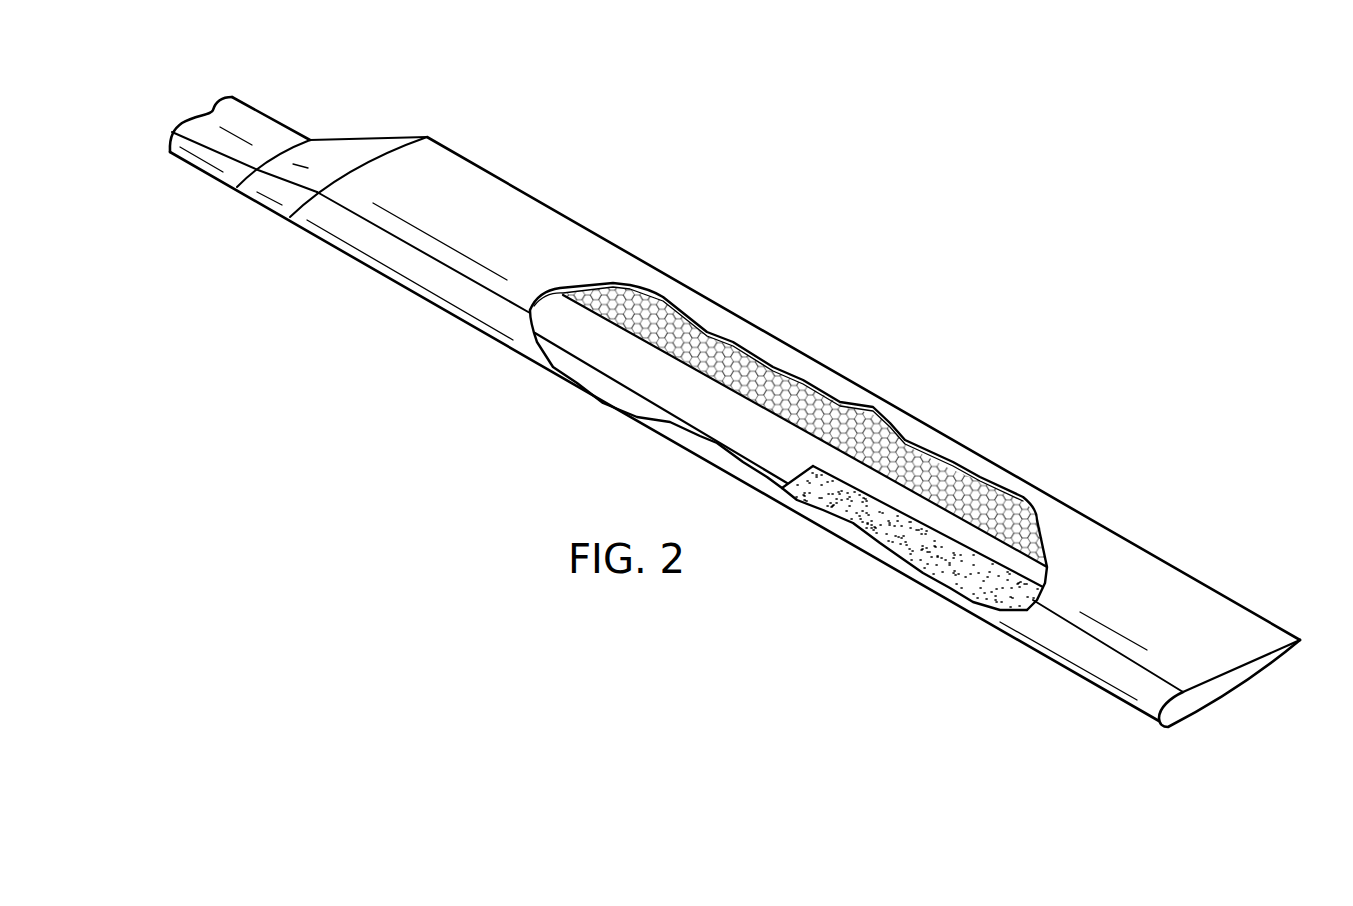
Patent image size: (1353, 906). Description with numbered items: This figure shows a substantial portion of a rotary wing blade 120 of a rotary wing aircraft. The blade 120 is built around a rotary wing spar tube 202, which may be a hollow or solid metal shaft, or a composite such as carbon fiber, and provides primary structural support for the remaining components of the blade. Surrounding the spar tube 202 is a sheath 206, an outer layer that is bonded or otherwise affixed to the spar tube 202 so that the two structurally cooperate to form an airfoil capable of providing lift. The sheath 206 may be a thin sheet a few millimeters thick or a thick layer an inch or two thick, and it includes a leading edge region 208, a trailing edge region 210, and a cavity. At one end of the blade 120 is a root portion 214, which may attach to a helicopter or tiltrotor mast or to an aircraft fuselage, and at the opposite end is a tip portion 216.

The rotary wing blade 120 is at (897, 168).
The rotary wing spar tube 202 is at (665, 386).
The sheath 206 is at (1213, 617).
The leading edge region 208 is at (1048, 674).
The trailing edge region 210 is at (1158, 544).
The root portion 214 is at (349, 99).
The tip portion 216 is at (1229, 725).